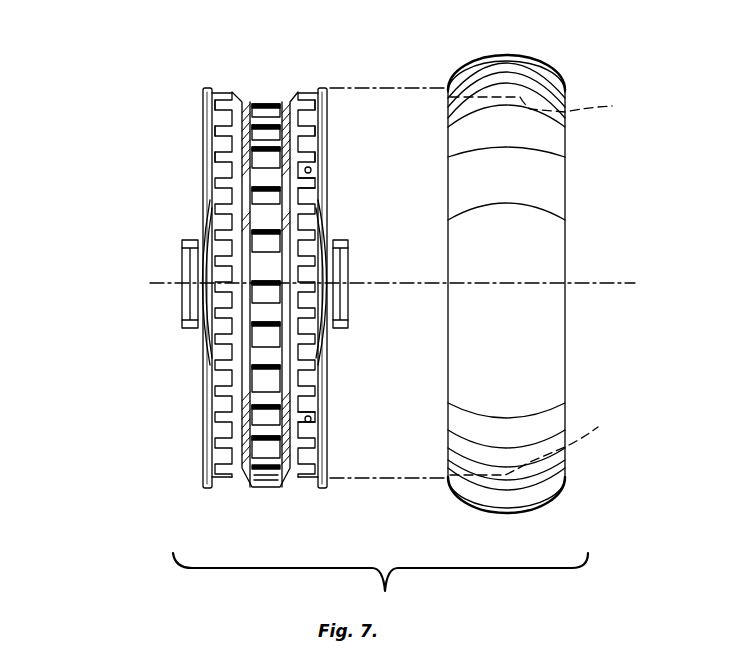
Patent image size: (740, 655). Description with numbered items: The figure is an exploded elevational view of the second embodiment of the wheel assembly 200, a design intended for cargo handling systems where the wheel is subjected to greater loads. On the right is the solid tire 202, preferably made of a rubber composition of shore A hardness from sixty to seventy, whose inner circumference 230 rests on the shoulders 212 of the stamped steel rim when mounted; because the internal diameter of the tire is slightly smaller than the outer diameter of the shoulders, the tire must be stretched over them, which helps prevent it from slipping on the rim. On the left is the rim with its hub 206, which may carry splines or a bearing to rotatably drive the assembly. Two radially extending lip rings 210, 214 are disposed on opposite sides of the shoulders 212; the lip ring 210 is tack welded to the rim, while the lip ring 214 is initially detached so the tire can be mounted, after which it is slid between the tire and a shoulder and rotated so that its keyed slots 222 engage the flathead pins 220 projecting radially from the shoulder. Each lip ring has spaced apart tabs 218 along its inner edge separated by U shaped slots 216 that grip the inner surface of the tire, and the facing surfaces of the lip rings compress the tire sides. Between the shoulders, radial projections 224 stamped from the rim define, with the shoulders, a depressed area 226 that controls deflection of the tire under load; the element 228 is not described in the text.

The wheel assembly 200 is at (178, 421).
The solid tire 202 is at (515, 68).
The hub 206 is at (185, 256).
The lip ring 210 is at (208, 88).
The shoulders 212 is at (290, 100).
The lip ring 214 is at (322, 88).
The U shaped slots 216 is at (218, 186).
The tabs 218 is at (221, 148).
The flathead pins 220 is at (313, 183).
The keyed slots 222 is at (312, 168).
The radial projections 224 is at (267, 293).
The depressed area 226 is at (268, 398).
The bottom bar 228 is at (271, 462).
The inner circumference 230 is at (551, 286).